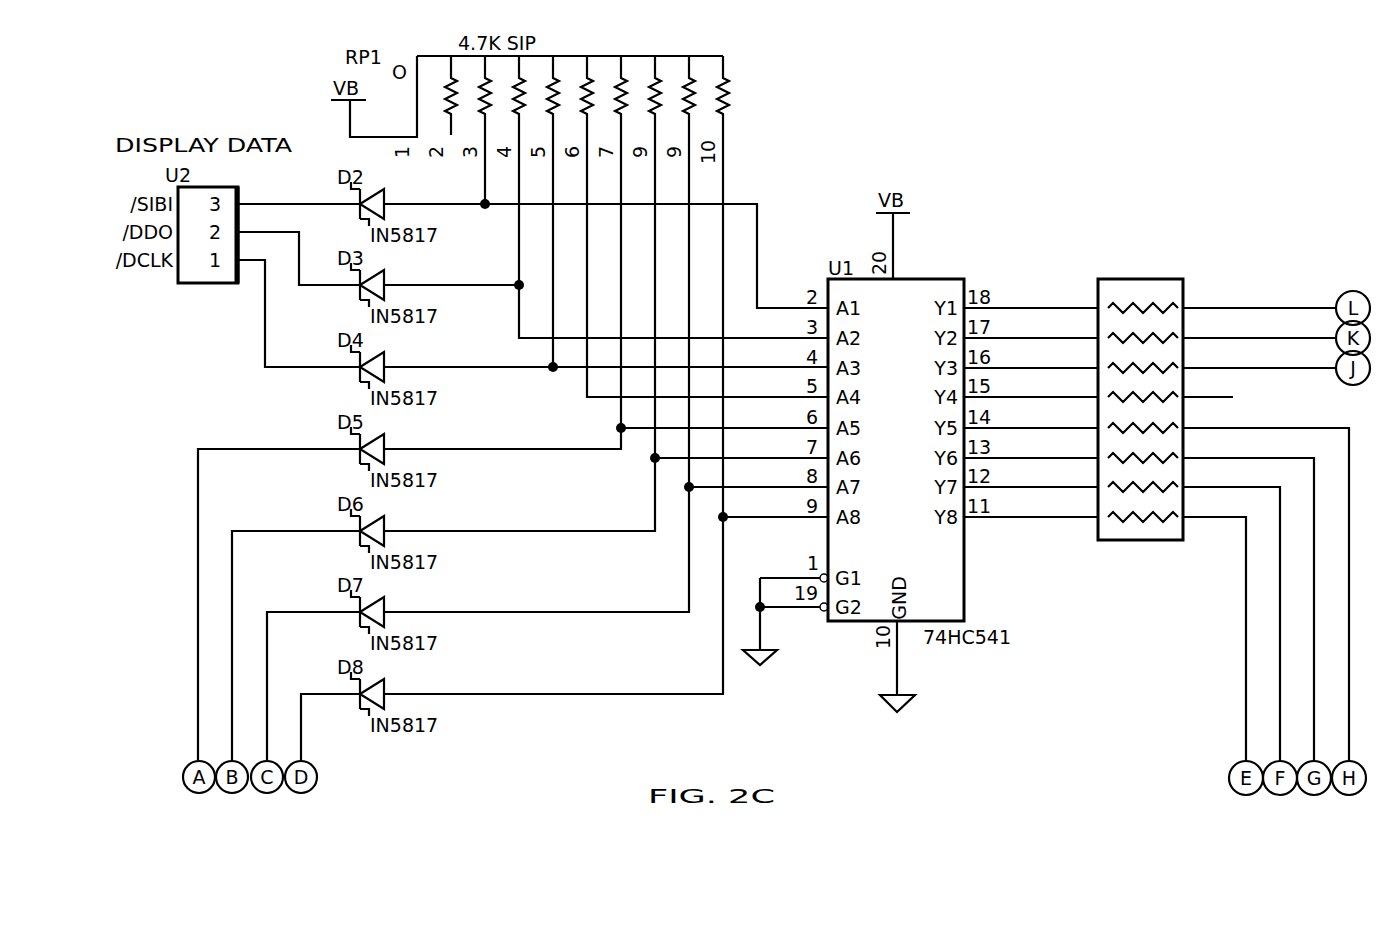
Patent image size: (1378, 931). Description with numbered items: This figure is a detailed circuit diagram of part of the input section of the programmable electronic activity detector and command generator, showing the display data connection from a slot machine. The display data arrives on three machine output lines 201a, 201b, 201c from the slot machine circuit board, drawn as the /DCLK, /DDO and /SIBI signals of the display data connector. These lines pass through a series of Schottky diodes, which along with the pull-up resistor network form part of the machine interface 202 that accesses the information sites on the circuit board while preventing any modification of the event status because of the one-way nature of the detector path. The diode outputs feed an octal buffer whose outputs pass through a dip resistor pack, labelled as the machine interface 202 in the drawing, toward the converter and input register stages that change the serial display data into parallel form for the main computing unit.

The machine output line 201a is at (252, 263).
The machine output line 201b is at (260, 232).
The machine output line 201c is at (325, 204).
The machine interface 202 is at (1158, 278).